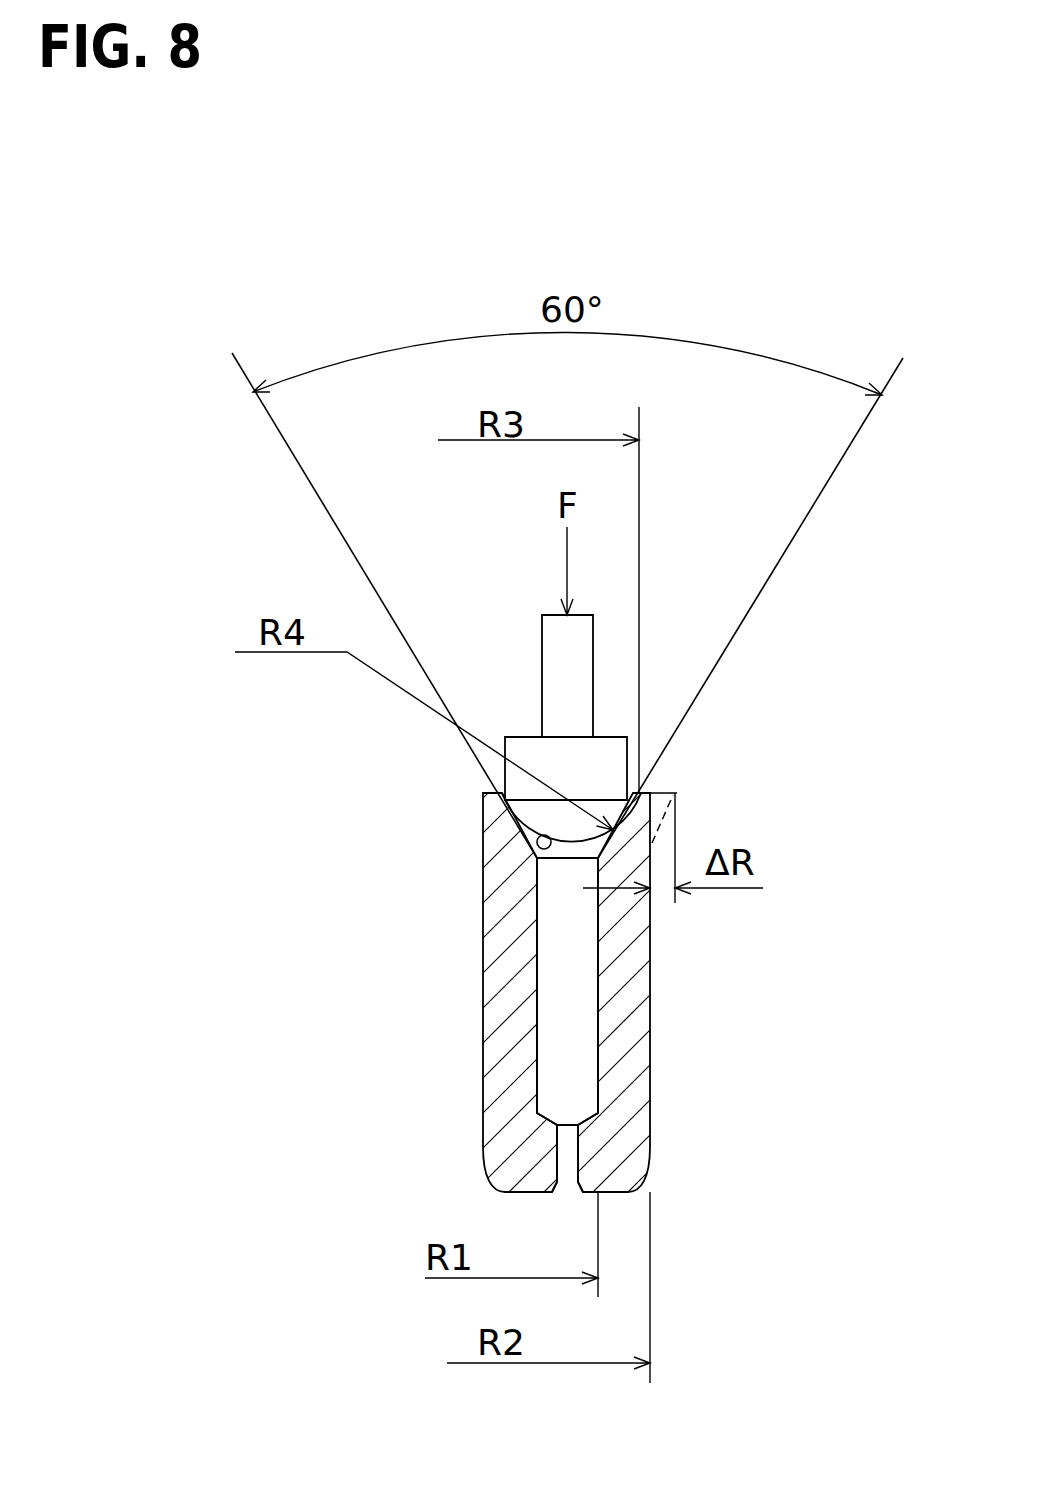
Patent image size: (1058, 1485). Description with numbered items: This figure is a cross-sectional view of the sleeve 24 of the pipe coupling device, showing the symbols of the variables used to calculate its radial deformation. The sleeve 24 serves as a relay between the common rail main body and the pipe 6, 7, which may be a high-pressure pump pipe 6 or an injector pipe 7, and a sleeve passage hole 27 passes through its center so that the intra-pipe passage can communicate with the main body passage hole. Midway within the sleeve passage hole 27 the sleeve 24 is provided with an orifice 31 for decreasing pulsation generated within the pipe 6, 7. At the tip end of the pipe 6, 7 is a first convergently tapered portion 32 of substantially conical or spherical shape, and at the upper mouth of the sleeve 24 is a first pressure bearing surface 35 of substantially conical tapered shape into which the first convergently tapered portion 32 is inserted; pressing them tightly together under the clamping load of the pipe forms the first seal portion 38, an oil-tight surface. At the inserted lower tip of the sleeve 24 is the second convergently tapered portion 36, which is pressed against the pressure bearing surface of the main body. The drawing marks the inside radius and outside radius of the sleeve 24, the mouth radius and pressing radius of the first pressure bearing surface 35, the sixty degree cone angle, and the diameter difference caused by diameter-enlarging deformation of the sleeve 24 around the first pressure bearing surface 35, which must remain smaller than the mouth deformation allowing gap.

The high-pressure pump pipe 6 is at (542, 707).
The injector pipe 7 is at (565, 678).
The sleeve 24 is at (503, 948).
The sleeve passage hole 27 is at (560, 1018).
The orifice 31 is at (565, 1153).
The second convergently tapered portion 36 is at (493, 1182).
The first seal portion 38 is at (567, 615).
The first convergently tapered portion 32 is at (537, 815).
The first pressure bearing surface 35 is at (540, 853).